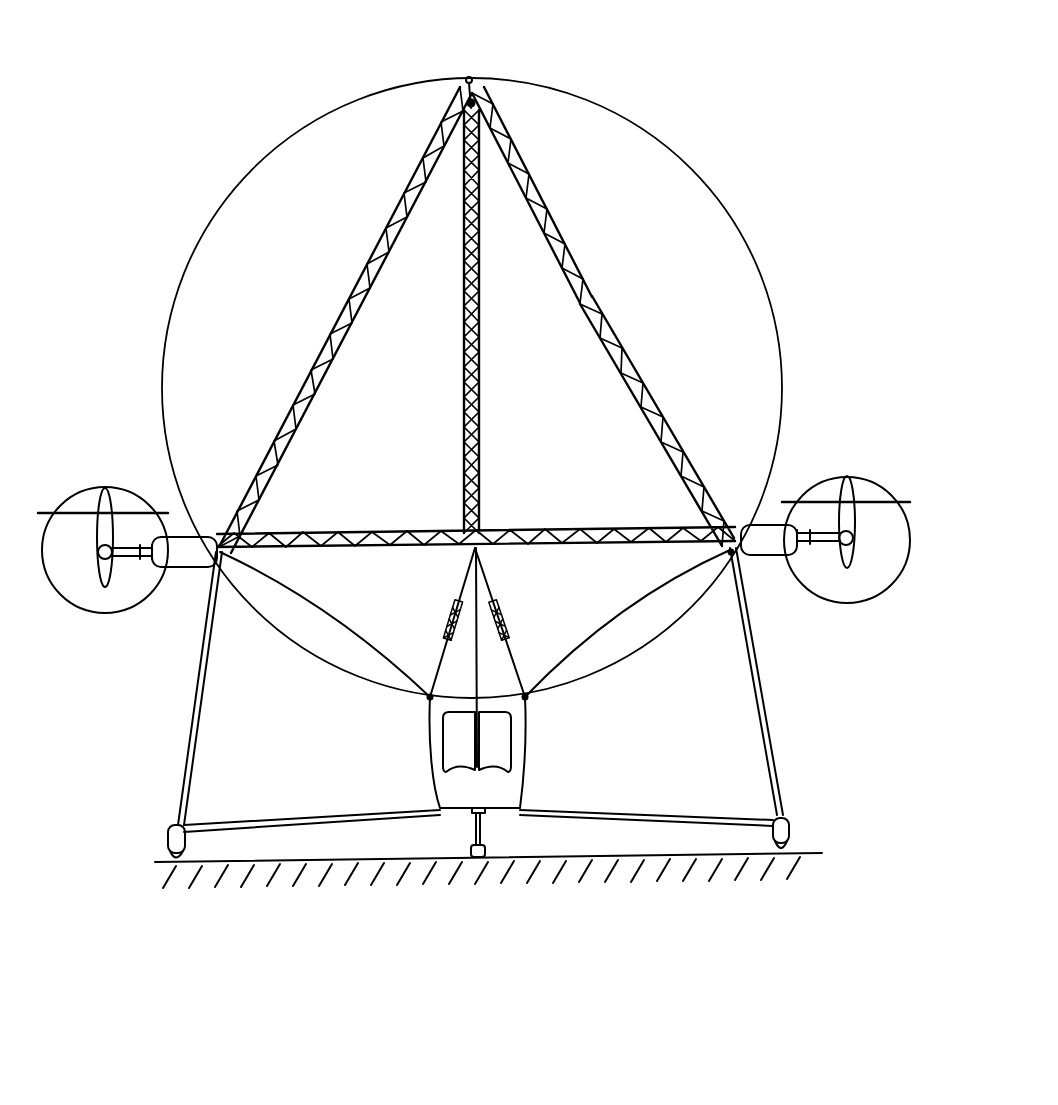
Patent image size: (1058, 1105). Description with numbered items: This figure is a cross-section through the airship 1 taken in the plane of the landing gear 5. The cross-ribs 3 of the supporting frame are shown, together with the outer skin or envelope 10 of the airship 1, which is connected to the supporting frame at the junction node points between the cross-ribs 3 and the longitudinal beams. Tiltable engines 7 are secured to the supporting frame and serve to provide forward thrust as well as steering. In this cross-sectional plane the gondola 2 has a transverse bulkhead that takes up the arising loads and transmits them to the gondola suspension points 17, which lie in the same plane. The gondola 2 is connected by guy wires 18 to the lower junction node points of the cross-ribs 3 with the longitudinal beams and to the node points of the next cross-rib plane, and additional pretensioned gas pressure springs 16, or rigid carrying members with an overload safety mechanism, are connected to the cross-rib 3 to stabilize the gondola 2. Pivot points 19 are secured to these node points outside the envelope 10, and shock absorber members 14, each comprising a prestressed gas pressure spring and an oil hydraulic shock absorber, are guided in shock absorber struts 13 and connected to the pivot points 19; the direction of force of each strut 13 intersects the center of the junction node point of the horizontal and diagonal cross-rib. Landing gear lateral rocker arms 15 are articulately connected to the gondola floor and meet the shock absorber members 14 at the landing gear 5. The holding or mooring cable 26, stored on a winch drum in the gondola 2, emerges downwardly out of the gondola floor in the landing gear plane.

The airship 1 is at (668, 105).
The gondola 2 is at (508, 788).
The cross-ribs 3 is at (703, 553).
The landing gear 5 is at (511, 741).
The tiltable engines 7 is at (108, 558).
The outer skin or envelope 10 is at (721, 193).
The shock absorber struts 13 is at (762, 703).
The shock absorber members 14 is at (782, 812).
The landing gear lateral rocker arms 15 is at (660, 820).
The pretensioned gas pressure springs 16 is at (452, 623).
The gondola suspension points 17 is at (430, 698).
The guy wires 18 is at (337, 629).
The pivot points 19 is at (730, 576).
The holding or mooring cable 26 is at (485, 827).